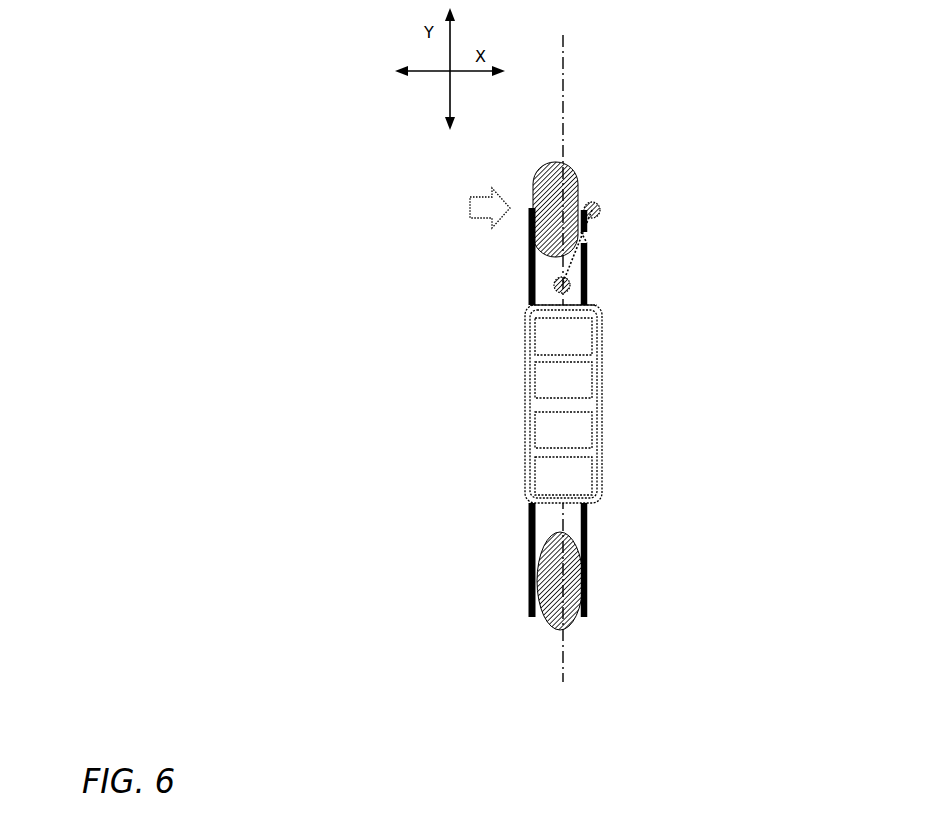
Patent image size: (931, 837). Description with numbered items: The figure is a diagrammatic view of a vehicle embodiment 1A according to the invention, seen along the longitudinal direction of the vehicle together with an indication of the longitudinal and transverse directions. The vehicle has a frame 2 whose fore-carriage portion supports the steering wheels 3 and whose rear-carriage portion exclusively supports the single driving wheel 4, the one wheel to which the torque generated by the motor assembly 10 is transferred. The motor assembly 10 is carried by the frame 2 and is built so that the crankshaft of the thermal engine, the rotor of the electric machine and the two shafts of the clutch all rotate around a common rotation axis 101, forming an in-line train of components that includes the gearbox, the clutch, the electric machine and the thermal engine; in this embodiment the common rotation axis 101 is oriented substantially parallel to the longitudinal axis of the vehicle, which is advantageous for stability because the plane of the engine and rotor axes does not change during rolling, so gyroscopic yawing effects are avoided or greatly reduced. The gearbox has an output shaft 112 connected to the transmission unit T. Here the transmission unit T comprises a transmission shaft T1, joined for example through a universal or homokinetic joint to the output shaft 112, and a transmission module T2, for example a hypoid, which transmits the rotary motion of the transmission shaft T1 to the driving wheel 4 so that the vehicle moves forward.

The syringe assembly / injection device 1A is at (629, 119).
The driving wheel 4 is at (552, 183).
The transmission module T2 is at (599, 196).
The transmission unit T is at (610, 217).
The transmission shaft T1 is at (584, 236).
The output shaft 112 is at (560, 304).
The motor assembly 10 is at (605, 371).
The frame 2 is at (591, 531).
The steering wheels 3 is at (586, 588).
The common rotation axis 101 is at (558, 663).